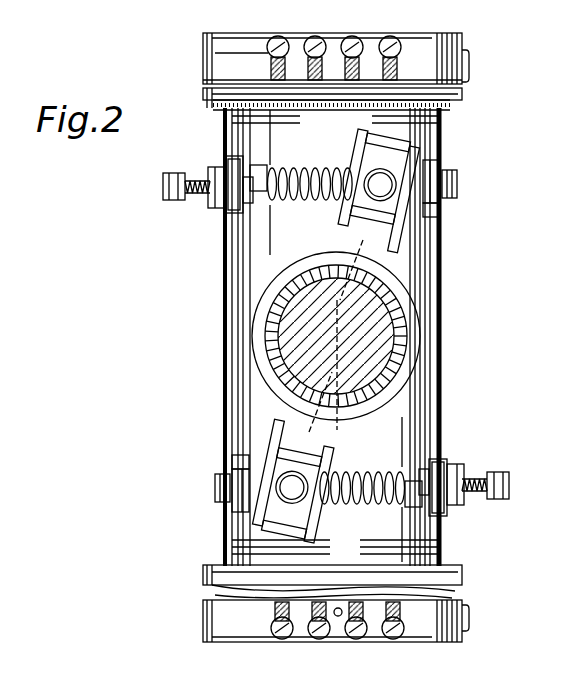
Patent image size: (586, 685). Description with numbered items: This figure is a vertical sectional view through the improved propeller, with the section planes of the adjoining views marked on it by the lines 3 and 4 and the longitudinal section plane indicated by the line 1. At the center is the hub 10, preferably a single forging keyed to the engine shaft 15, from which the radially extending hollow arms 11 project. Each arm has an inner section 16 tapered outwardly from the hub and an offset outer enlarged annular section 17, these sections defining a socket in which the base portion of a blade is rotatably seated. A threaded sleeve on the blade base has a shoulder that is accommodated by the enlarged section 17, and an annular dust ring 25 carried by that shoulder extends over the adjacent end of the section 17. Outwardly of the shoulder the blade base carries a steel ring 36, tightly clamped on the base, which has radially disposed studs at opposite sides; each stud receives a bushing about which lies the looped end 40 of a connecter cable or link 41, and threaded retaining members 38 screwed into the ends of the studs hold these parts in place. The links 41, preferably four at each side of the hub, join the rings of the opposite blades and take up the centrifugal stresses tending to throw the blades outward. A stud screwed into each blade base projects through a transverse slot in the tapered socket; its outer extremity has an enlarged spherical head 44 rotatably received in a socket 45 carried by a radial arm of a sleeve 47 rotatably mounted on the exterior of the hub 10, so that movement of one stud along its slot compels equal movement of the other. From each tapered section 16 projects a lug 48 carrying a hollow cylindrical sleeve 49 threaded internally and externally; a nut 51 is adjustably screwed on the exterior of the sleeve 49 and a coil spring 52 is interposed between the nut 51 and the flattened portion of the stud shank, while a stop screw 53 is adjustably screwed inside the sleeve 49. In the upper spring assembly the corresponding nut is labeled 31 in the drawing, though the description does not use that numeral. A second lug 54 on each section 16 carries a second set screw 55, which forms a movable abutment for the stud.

The section line 1- 1 is at (385, 127).
The section line 3- 3 is at (158, 186).
The section line 4- 4 is at (160, 627).
The hub 10 is at (394, 348).
The hollow arms 11 is at (446, 247).
The engine shaft 15 is at (413, 312).
The inner section 16 is at (224, 138).
The outer enlarged annular section 17 is at (203, 97).
The annular dust ring 25 is at (466, 71).
The spring seat 31 is at (262, 165).
The steel ring 36 is at (462, 38).
The threaded retaining members 38 is at (313, 34).
The looped end 40 is at (272, 62).
The connecter cable or link 41 is at (317, 81).
The spherical head 44 is at (392, 214).
The socket 45 is at (376, 200).
The sleeve 47 is at (404, 298).
The lug 48 is at (224, 211).
The hollow cylindrical sleeve 49 is at (277, 206).
The nut 51 is at (411, 458).
The coil spring 52 is at (302, 168).
The stop screw 53 is at (183, 202).
The second lug 54 is at (441, 162).
The second set screw 55 is at (454, 202).